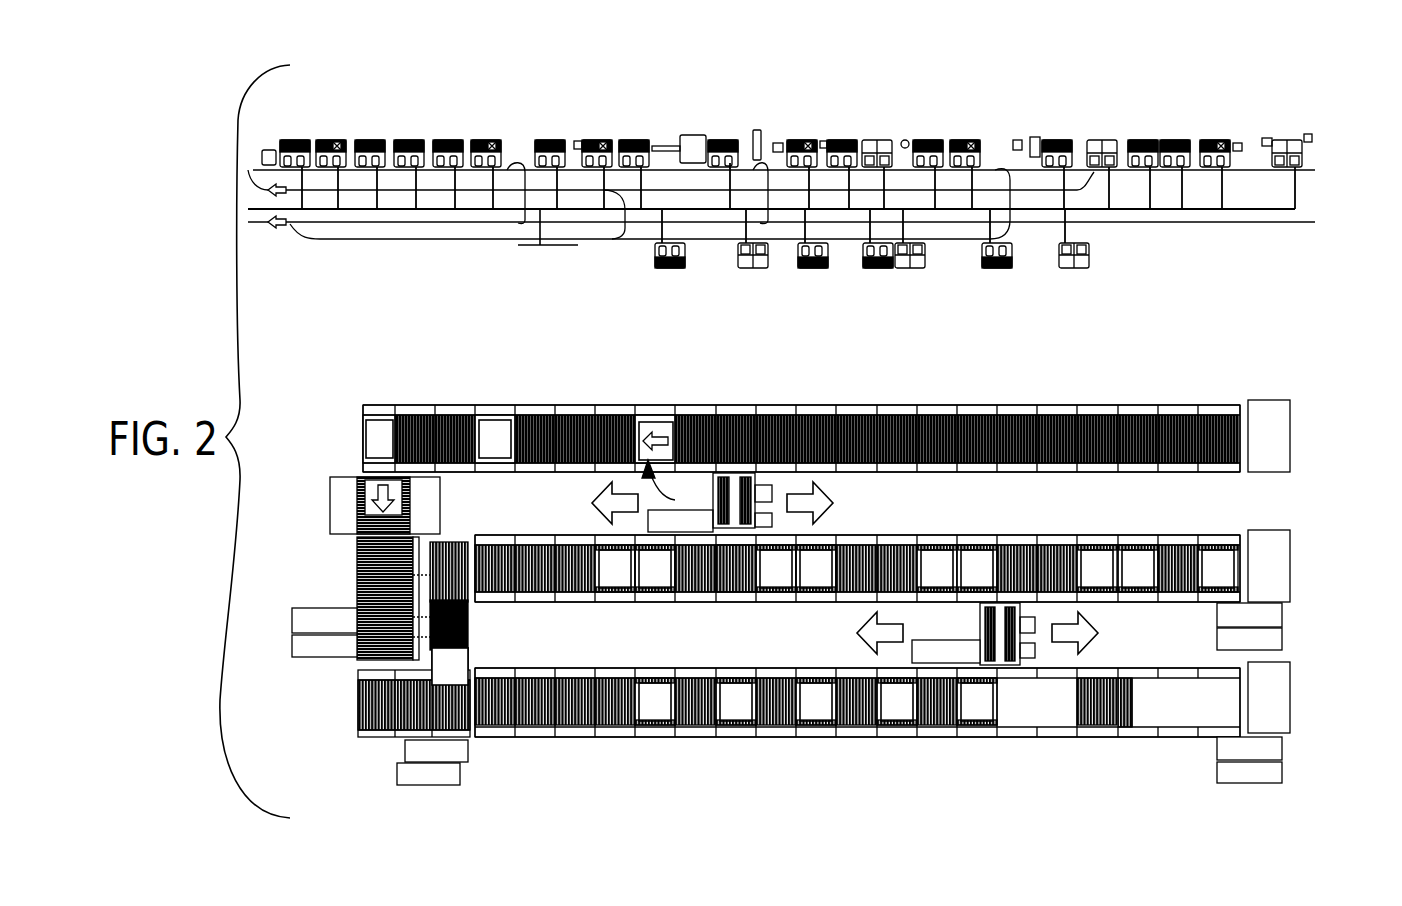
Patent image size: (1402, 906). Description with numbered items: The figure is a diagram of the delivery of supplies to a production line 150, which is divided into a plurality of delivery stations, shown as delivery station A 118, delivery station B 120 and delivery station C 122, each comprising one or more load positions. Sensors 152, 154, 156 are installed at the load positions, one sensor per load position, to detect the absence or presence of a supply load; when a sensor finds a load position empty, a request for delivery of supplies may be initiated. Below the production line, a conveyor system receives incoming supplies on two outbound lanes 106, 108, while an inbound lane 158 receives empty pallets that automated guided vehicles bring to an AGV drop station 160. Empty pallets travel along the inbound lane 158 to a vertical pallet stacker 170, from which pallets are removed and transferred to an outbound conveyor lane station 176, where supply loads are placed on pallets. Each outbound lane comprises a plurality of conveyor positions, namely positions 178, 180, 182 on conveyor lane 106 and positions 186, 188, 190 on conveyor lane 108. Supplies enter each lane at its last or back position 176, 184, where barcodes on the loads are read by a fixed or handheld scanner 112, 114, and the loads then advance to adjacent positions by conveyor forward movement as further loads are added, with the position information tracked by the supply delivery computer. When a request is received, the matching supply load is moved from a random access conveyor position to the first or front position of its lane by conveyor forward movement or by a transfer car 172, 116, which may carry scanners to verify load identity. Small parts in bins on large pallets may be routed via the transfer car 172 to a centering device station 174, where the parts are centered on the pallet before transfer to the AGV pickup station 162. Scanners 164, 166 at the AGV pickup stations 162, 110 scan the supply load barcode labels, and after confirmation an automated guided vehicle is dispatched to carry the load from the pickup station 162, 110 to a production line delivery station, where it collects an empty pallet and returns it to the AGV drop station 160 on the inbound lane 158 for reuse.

The production line 150 is at (1167, 96).
The sensor 152 is at (656, 256).
The delivery station A 118 is at (678, 268).
The delivery station B 120 is at (806, 268).
The sensor 154 is at (825, 255).
The sensor 156 is at (985, 255).
The delivery station C 122 is at (1003, 268).
The inbound lane 158 is at (1140, 388).
The AGV drop station 160 is at (1290, 437).
The AGV pickup station 162 is at (1290, 567).
The AGV pickup station 110 is at (1290, 698).
The scanner 164 is at (1210, 628).
The scanner 166 is at (1210, 758).
The vertical pallet stacker 170 is at (330, 503).
The transfer car 172 is at (713, 493).
The centering device station 174 is at (1218, 533).
The outbound conveyor lane station 176 is at (357, 568).
The scanner 112 is at (292, 620).
The back position 184 is at (358, 705).
The scanner 114 is at (430, 785).
The outbound lane 106 is at (500, 604).
The outbound lane 108 is at (500, 740).
The transfer car 116 is at (980, 618).
The conveyor position 178 is at (656, 603).
The conveyor position 180 is at (734, 603).
The conveyor position 182 is at (820, 603).
The conveyor position 186 is at (656, 738).
The conveyor position 188 is at (734, 738).
The conveyor position 190 is at (820, 738).